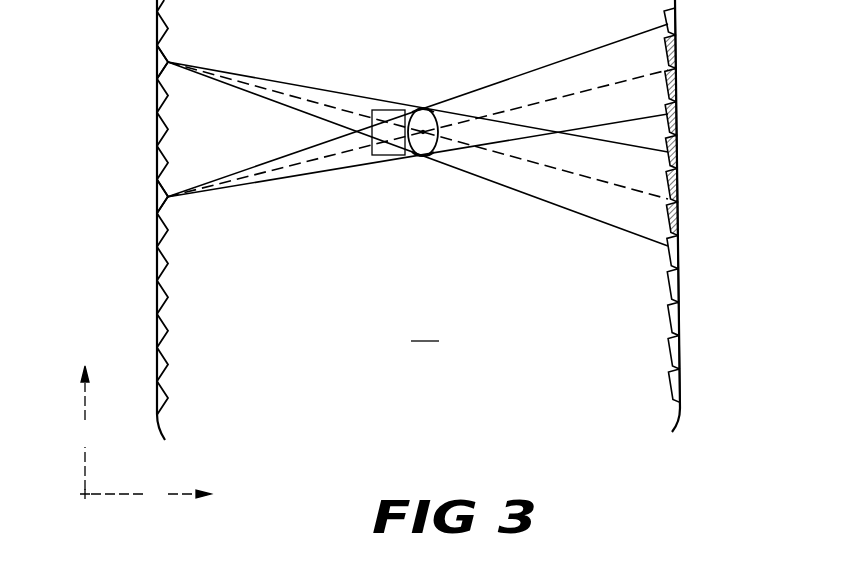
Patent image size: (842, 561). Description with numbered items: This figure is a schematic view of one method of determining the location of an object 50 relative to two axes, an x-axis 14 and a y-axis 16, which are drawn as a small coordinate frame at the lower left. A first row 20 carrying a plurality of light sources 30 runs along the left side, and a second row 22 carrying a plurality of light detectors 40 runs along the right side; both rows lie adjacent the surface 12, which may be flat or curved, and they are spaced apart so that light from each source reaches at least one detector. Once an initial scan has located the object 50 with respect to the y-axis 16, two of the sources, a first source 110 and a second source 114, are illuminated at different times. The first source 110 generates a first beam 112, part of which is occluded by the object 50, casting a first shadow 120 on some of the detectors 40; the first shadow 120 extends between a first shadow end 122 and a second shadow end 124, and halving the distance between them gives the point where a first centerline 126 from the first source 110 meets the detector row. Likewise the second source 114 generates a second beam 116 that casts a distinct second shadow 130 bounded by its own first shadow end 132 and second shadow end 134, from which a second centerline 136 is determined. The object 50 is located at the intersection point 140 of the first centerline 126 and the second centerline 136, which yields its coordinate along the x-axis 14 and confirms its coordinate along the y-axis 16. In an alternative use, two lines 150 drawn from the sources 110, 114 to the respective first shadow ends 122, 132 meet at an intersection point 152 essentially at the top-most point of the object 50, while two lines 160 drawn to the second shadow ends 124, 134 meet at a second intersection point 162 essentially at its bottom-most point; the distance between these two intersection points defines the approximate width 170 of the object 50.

The surface 12 is at (425, 329).
The x-axis 14 is at (107, 495).
The y-axis 16 is at (85, 473).
The first row 20 is at (165, 440).
The second row 22 is at (672, 432).
The light sources 30 is at (164, 293).
The light detectors 40 is at (677, 358).
The object 50 is at (430, 108).
The first source 110 is at (169, 62).
The first beam 112 is at (287, 85).
The second source 114 is at (168, 198).
The second beam 116 is at (302, 170).
The first shadow 120 is at (708, 201).
The first shadow end 122 is at (674, 154).
The second shadow end 124 is at (709, 234).
The first centerline 126 is at (613, 185).
The second shadow 130 is at (705, 74).
The first shadow end 132 is at (672, 14).
The second shadow end 134 is at (706, 118).
The second centerline 136 is at (628, 78).
The intersection point 140 is at (437, 155).
The lines 150 is at (292, 84).
The intersection point 152 is at (425, 108).
The lines 160 is at (327, 172).
The second intersection point 162 is at (413, 157).
The width 170 is at (393, 110).